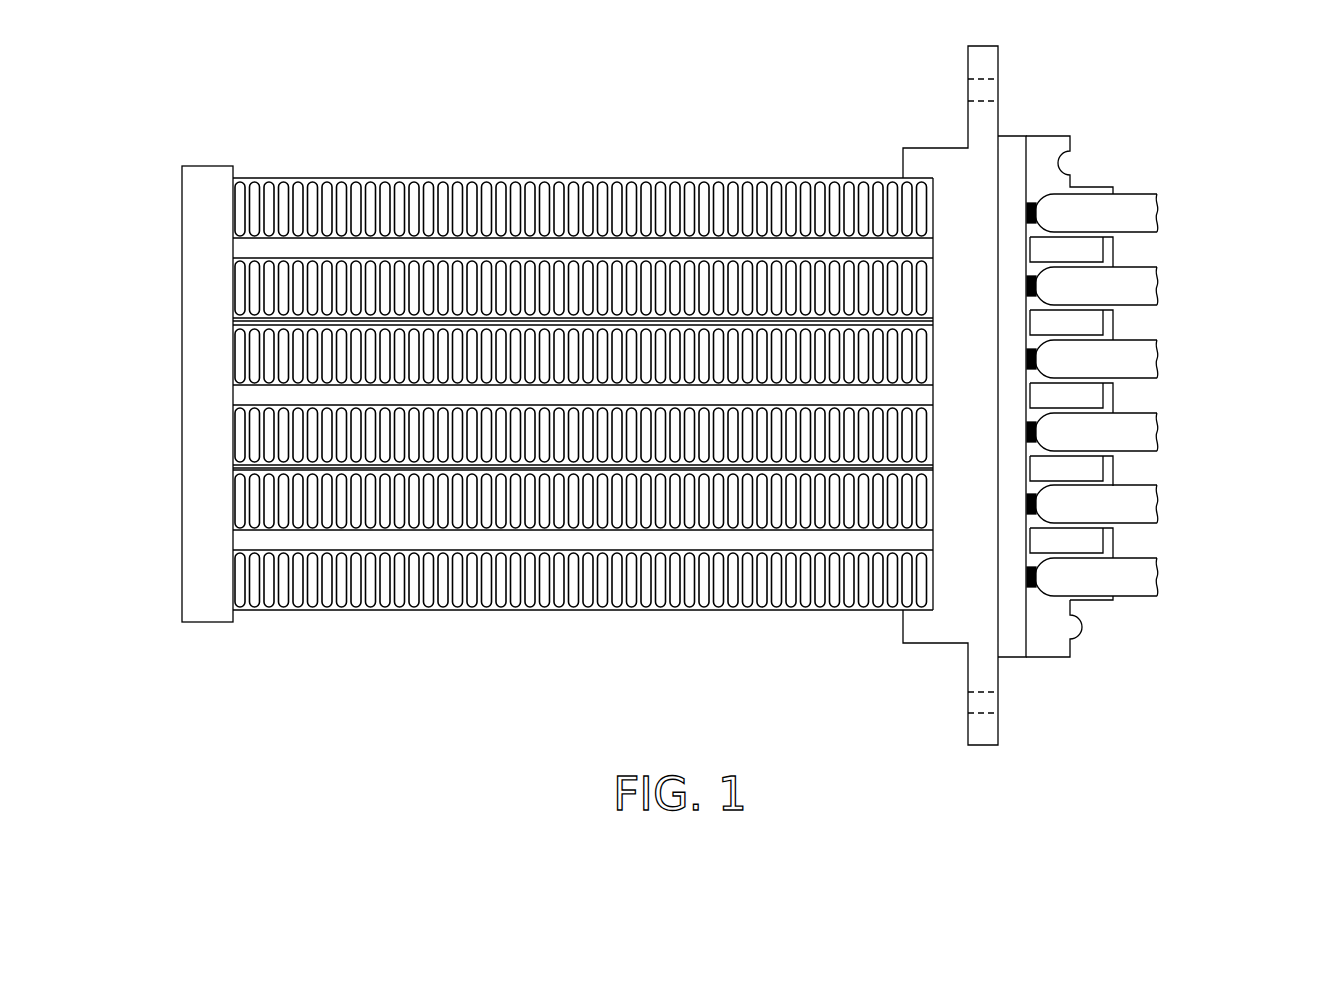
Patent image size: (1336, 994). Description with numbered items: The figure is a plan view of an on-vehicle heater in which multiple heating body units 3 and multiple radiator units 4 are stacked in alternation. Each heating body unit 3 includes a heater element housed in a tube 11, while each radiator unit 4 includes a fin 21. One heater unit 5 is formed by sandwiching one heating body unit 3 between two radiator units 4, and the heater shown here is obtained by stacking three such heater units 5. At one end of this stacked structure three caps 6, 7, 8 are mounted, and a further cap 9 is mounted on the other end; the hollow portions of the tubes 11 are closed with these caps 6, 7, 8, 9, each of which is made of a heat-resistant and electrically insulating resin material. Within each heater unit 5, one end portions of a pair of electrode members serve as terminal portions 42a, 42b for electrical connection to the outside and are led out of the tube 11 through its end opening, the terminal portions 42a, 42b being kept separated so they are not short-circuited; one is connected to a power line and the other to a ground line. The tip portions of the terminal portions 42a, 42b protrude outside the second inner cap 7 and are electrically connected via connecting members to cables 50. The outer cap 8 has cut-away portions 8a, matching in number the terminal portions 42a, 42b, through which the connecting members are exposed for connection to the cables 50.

The heating body unit 3 is at (222, 254).
The radiator unit 4 is at (222, 215).
The heater unit 5 is at (130, 190).
The cap 6 is at (940, 155).
The second inner cap 7 is at (1012, 147).
The outer cap 8 is at (1046, 147).
The cut-away portion 8a is at (1038, 450).
The cap 9 is at (208, 183).
The tube 11 is at (560, 252).
The fin 21 is at (402, 217).
The terminal portion 42a is at (1040, 418).
The terminal portion 42b is at (1031, 431).
The cable 50 is at (1150, 232).